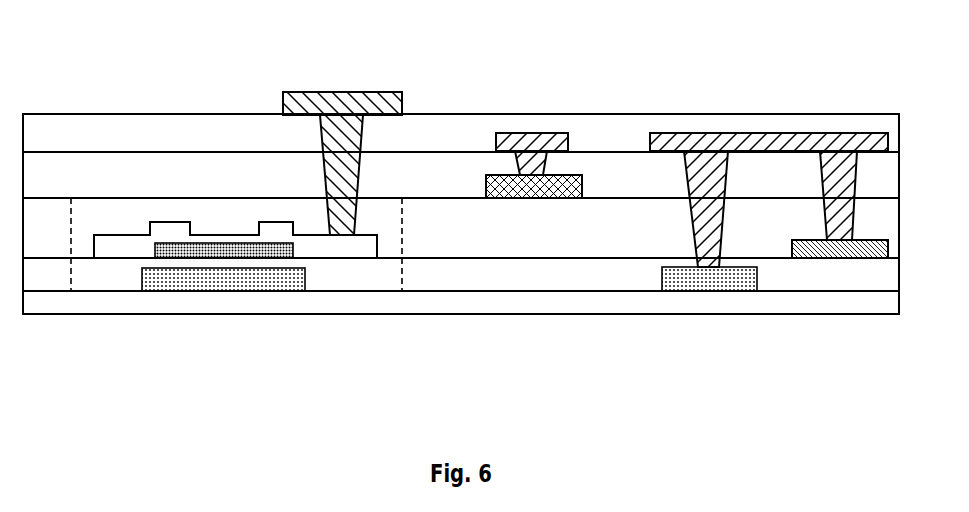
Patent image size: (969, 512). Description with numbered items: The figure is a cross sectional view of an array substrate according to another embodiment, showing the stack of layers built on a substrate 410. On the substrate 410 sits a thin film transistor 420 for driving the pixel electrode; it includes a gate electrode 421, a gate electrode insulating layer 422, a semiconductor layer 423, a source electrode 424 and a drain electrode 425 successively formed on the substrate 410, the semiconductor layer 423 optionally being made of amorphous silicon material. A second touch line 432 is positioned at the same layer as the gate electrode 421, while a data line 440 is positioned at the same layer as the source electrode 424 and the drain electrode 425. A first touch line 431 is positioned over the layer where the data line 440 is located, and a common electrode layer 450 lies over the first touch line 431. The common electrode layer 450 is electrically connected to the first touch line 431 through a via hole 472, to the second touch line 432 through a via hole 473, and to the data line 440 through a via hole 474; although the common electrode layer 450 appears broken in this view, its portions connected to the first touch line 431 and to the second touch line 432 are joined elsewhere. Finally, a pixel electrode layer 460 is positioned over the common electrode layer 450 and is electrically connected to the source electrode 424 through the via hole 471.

The substrate 410 is at (505, 303).
The thin film transistor 420 is at (402, 283).
The gate electrode 421 is at (235, 290).
The gate electrode insulating layer 422 is at (117, 276).
The semiconductor layer 423 is at (228, 243).
The source electrode 424 is at (332, 245).
The drain electrode 425 is at (108, 247).
The first touch line 431 is at (563, 187).
The second touch line 432 is at (700, 285).
The data line 440 is at (838, 255).
The common electrode layer 450 is at (535, 142).
The pixel electrode layer 460 is at (343, 103).
The via hole 471 is at (343, 152).
The via hole 472 is at (528, 160).
The via hole 473 is at (710, 170).
The via hole 474 is at (840, 175).